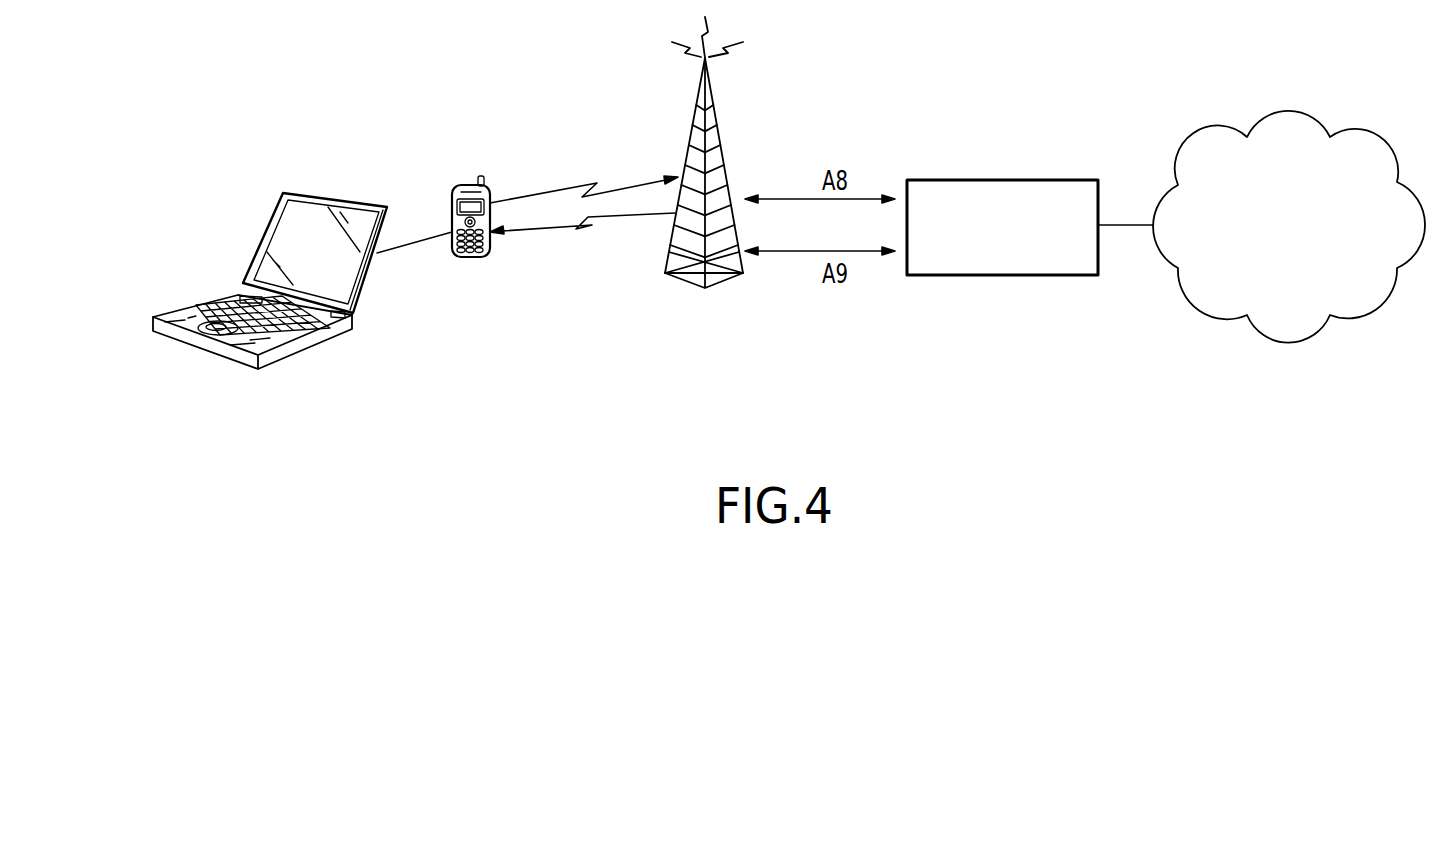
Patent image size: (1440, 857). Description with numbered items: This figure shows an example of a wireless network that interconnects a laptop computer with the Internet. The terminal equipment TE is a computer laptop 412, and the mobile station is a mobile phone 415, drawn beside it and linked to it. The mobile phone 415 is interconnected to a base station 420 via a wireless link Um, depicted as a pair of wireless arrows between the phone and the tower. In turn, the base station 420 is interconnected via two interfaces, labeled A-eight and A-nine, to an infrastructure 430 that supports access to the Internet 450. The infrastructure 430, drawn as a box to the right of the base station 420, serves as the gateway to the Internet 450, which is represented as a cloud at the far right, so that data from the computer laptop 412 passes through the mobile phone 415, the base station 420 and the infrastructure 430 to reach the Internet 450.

The computer laptop 412 is at (333, 195).
The mobile phone 415 is at (487, 186).
The base station 420 is at (722, 147).
The infrastructure 430 is at (1003, 180).
The Internet 450 is at (1303, 283).